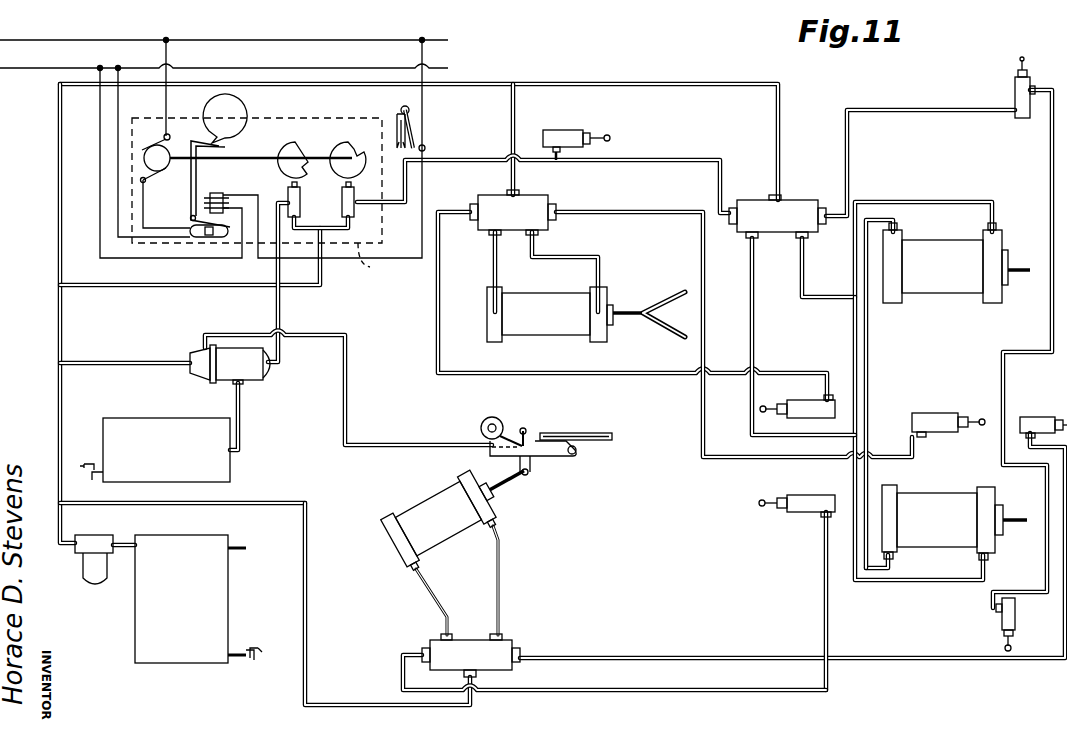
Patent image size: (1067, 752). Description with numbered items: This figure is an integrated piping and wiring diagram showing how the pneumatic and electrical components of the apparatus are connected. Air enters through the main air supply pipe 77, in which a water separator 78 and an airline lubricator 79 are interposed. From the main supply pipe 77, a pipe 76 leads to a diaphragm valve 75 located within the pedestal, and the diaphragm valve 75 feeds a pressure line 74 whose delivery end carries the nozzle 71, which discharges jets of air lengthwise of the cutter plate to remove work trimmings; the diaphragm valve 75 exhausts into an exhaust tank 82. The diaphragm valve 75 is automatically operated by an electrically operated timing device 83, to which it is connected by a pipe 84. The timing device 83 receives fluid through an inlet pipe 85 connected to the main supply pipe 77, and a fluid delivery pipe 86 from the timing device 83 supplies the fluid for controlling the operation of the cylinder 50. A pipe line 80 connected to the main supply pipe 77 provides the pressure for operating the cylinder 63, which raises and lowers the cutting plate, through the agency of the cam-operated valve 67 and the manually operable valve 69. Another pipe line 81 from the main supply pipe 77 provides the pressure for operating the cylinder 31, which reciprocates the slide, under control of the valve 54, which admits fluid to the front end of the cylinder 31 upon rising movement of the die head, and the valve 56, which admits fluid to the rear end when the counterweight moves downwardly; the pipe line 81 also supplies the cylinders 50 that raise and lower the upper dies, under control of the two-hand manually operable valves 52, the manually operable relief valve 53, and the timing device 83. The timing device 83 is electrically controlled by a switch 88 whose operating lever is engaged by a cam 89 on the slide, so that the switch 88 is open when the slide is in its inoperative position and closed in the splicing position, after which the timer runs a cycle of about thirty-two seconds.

The fluid pressure operated cylinder 31 is at (556, 330).
The double-acting fluid pressure cylinder 50 is at (944, 282).
The manually operable valve 52 is at (1014, 88).
The manually operable relief valve 53 is at (580, 118).
The fluid pressure valve 54 is at (948, 416).
The valve 56 is at (810, 402).
The cylinder 63 is at (442, 496).
The valve 67 is at (802, 508).
The manually operable valve 69 is at (1040, 418).
The nozzle 71 is at (532, 428).
The pressure line 74 is at (376, 450).
The diaphragm valve 75 is at (252, 374).
The pipe 76 is at (128, 366).
The main air supply pipe 77 is at (58, 418).
The water separator 78 is at (224, 585).
The airline lubricator 79 is at (96, 582).
The pipe line 80 is at (357, 702).
The pipe line 81 is at (680, 88).
The exhaust tank 82 is at (220, 464).
The electrically operated timing device 83 is at (260, 188).
The pipe 84 is at (276, 304).
The pipe 85 is at (212, 288).
The fluid delivery pipe 86 is at (692, 158).
The switch 88 is at (425, 137).
The cam 89 is at (397, 118).